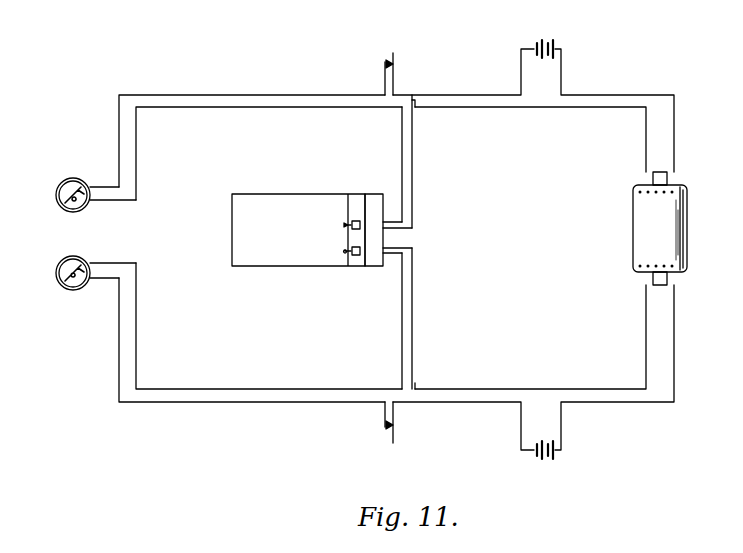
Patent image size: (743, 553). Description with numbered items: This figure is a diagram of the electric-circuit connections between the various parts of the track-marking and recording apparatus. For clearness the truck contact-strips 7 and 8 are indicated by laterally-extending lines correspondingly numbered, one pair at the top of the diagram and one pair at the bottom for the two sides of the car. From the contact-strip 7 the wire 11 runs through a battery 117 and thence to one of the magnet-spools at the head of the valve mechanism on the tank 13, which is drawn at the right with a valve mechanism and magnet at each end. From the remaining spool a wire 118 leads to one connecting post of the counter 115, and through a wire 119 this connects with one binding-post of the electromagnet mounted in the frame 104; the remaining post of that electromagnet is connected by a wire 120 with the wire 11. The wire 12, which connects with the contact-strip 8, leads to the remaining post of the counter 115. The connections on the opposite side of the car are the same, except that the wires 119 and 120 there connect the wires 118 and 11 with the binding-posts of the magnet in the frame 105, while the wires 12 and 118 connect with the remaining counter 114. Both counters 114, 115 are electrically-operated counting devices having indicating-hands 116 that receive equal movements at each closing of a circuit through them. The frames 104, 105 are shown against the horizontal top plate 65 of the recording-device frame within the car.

The truck contact-strip 7 is at (395, 68).
The truck contact-strip 8 is at (384, 80).
The wire 11 is at (448, 95).
The wire 12 is at (256, 95).
The tank or cylinder 13 is at (682, 223).
The horizontal top plate 65 is at (267, 259).
The frame 104 is at (352, 260).
The frame 105 is at (355, 218).
The counting device 114 is at (80, 180).
The counting device 115 is at (72, 257).
The indicating-hand 116 is at (68, 198).
The battery 117 is at (553, 44).
The wire 118 is at (236, 110).
The wire 119 is at (413, 153).
The wire 120 is at (410, 160).